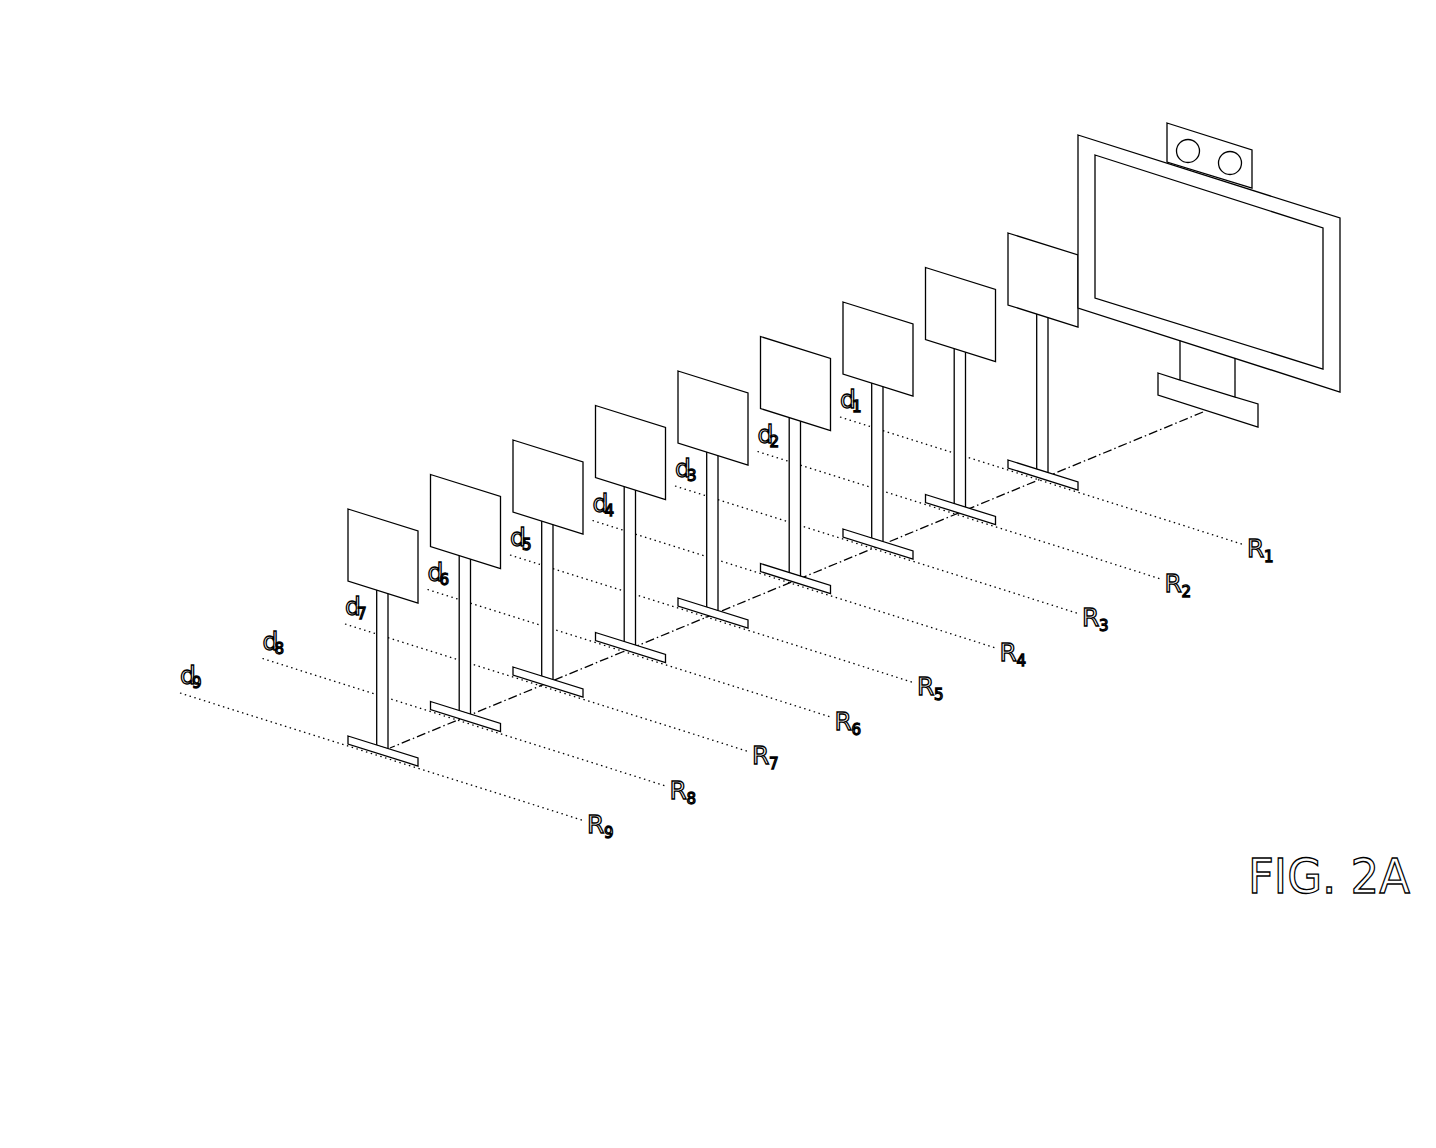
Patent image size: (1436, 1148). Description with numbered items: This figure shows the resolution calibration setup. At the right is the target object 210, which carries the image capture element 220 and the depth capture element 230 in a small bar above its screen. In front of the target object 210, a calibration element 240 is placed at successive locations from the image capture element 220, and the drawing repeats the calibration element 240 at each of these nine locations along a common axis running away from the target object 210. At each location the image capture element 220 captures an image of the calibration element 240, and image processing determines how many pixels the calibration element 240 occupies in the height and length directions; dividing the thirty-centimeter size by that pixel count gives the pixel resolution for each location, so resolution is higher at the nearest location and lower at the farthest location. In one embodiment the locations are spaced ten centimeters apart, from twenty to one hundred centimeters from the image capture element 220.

The target object 210 is at (1342, 300).
The image capture element 220 is at (1167, 143).
The depth capture element 230 is at (1242, 160).
The calibration element 240 is at (1050, 458).